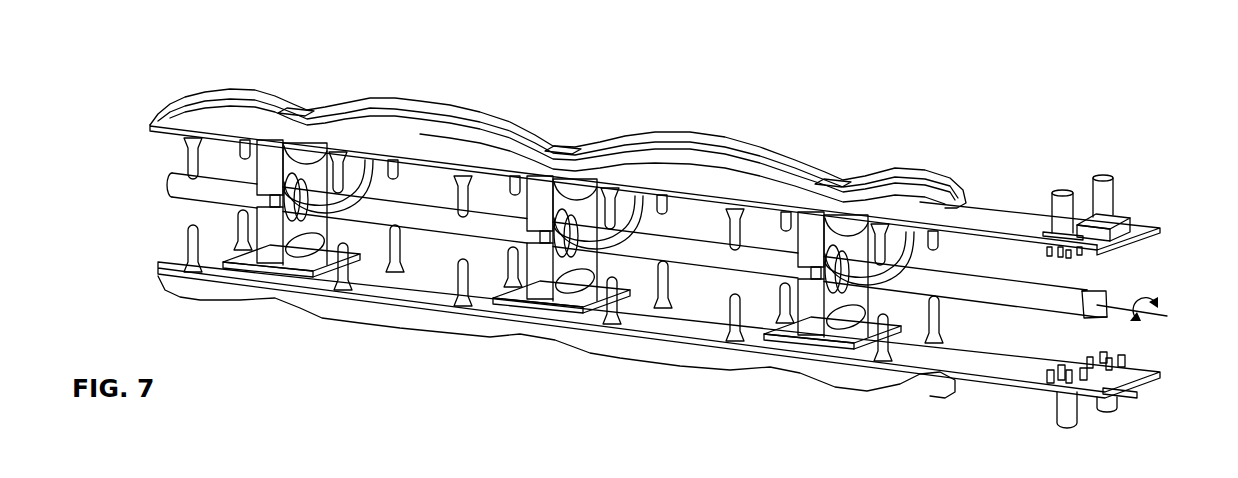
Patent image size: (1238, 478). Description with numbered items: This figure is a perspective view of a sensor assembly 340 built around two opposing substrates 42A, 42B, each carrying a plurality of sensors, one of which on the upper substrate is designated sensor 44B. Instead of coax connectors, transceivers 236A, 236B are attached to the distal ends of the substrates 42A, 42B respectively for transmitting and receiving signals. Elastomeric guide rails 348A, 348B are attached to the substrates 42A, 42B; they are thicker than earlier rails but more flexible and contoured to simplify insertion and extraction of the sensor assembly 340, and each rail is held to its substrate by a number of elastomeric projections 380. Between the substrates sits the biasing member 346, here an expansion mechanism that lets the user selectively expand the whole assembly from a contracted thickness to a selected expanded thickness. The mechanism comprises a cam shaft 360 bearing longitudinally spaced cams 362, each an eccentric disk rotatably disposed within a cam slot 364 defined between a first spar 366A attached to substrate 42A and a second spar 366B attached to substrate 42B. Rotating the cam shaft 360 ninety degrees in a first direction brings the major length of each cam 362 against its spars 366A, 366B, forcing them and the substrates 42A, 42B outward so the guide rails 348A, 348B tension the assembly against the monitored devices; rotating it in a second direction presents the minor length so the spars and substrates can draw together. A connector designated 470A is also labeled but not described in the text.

The sensor assembly 340 is at (1013, 89).
The biasing member 346 is at (132, 183).
The first substrate 42A is at (692, 365).
The second substrate 42B is at (683, 191).
The sensor 44B is at (307, 112).
The transceiver 236A is at (1107, 431).
The transceiver 236B is at (1120, 194).
The elastomeric guide rail 348A is at (867, 383).
The elastomeric guide rail 348B is at (683, 163).
The cam shaft 360 is at (1070, 292).
The cam 362 is at (285, 212).
The cam slot 364 is at (365, 175).
The first spar 366A is at (262, 225).
The second spar 366B is at (263, 178).
The elastomeric projection 380 is at (457, 264).
The connector 470A is at (473, 473).